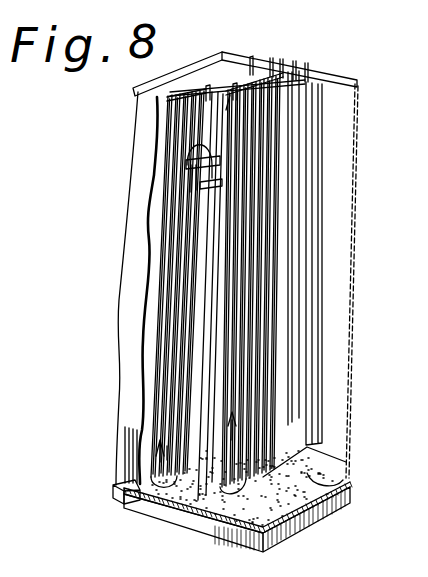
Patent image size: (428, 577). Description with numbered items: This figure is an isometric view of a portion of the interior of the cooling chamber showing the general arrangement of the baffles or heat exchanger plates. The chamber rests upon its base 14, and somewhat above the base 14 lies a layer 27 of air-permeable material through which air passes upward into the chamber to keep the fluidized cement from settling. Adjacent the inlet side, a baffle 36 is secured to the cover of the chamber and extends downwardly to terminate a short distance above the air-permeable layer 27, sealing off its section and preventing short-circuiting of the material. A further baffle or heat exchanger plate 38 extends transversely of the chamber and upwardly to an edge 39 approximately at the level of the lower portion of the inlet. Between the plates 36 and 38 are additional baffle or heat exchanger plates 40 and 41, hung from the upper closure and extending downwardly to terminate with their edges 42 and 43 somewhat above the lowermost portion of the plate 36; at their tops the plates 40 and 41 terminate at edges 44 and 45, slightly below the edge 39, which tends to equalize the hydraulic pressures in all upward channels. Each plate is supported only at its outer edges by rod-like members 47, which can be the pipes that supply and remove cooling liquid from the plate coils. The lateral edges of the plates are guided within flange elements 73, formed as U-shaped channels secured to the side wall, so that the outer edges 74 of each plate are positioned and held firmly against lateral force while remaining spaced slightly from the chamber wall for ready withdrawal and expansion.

The base 14 is at (290, 533).
The layer of air-permeable material 27 is at (348, 494).
The baffle 36 is at (290, 222).
The baffle or heat exchanger plate 38 is at (184, 275).
The edge 39 is at (204, 172).
The baffle or heat exchanger plate 40 is at (216, 360).
The baffle or heat exchanger plate 41 is at (190, 325).
The edge 42 is at (214, 408).
The edge 43 is at (200, 402).
The edge 44 is at (210, 188).
The edge 45 is at (215, 166).
The rod-like members 47 is at (297, 68).
The flange elements 73 is at (314, 305).
The outer edges 74 is at (300, 450).